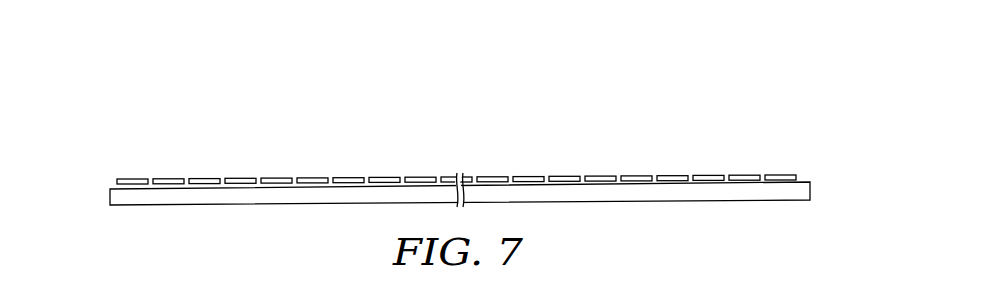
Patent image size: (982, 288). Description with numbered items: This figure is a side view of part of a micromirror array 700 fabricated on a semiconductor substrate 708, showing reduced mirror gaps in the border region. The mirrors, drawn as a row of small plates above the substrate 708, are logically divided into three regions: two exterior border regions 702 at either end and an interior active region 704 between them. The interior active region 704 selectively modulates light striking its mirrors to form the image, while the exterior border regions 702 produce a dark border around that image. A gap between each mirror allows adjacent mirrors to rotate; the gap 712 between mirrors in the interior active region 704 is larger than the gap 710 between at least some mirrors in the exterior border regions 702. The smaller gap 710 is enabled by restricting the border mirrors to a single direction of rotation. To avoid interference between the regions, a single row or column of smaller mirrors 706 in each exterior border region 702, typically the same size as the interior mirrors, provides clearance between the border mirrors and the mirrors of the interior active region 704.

The micromirror array 700 is at (140, 79).
The exterior border region 702 is at (327, 125).
The interior active region 704 is at (580, 124).
The smaller mirrors 706 is at (317, 178).
The semiconductor substrate 708 is at (168, 205).
The gap between mirrors in exterior border region 710 is at (152, 178).
The gap between mirrors in interior active region 712 is at (403, 177).